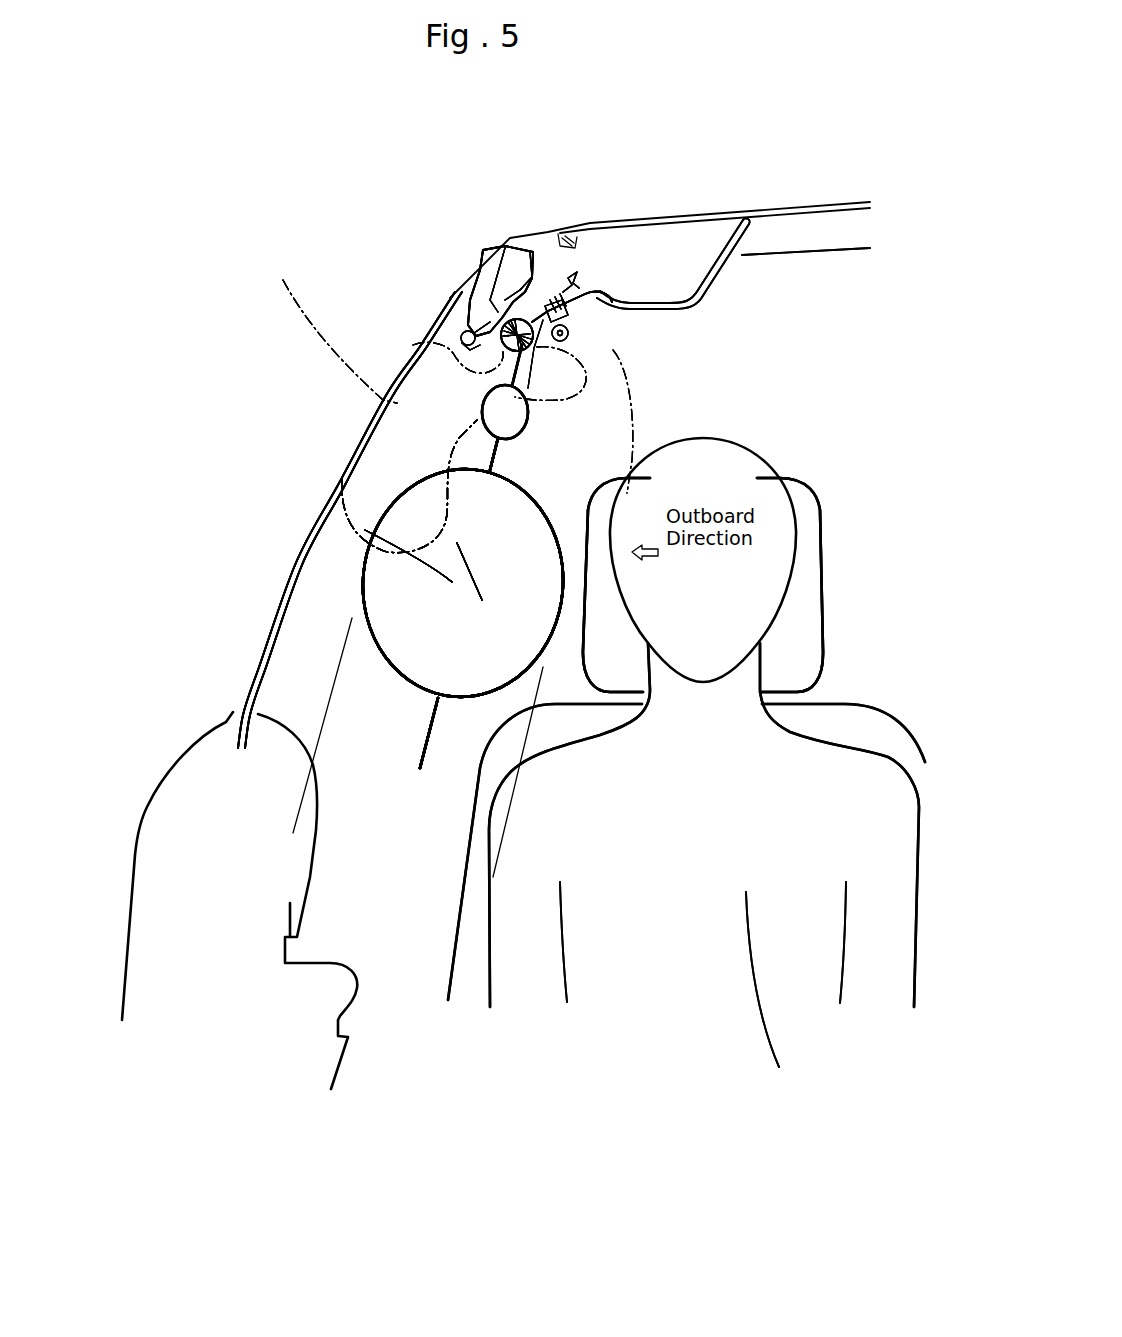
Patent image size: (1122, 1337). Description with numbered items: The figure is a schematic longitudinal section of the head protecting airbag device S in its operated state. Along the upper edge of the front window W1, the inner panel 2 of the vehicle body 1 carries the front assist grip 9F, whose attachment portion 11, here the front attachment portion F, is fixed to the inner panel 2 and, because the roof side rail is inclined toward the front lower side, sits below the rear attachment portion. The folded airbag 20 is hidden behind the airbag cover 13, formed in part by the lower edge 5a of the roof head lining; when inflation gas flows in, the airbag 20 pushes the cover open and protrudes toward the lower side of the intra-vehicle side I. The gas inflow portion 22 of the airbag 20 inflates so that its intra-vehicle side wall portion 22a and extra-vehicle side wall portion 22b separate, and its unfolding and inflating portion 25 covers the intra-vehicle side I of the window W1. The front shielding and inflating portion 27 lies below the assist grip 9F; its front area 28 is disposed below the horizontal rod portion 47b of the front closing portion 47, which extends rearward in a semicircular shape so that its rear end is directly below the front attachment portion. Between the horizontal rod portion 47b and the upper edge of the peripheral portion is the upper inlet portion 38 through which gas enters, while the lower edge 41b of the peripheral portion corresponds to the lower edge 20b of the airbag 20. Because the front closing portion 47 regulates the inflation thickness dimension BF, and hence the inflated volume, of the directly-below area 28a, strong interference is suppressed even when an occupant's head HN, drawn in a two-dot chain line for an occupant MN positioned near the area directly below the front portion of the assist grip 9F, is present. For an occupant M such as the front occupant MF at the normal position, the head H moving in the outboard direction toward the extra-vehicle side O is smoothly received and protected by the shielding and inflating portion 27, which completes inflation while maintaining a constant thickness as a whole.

The airbag 20 is at (500, 315).
The inner panel 2 is at (533, 300).
The body 1 is at (512, 280).
The front assist grip 9F is at (603, 312).
The attachment portion 11 is at (623, 318).
The front side F is at (733, 226).
The directly-below area 28a is at (365, 530).
The front area 28 is at (399, 646).
The front shielding and inflating portion 27 is at (332, 508).
The lower edge of roof head lining 5a is at (427, 320).
The airbag cover 13 is at (489, 499).
The upper inlet portion 38 is at (483, 400).
The front window W1 is at (301, 433).
The extra-vehicle side wall portion 22b is at (363, 582).
The gas inflow portion 22 is at (373, 594).
The unfolding and inflating portion 25 is at (393, 594).
The lower edge of airbag 20b is at (423, 730).
The lower edge of peripheral portion 41b is at (350, 594).
The inflation thickness dimension BF is at (475, 879).
The extra-vehicle side O is at (100, 950).
The intra-vehicle side I is at (500, 1103).
The head protecting airbag device S is at (395, 1033).
The occupant M is at (704, 873).
The front occupant MF is at (704, 873).
The intra-vehicle side wall portion 22a is at (555, 623).
The head H is at (765, 573).
The occupant's head HN is at (600, 437).
The headrest (neck support) MN is at (740, 521).
The front closing portion 47 is at (497, 452).
The horizontal rod portion 47b is at (593, 379).